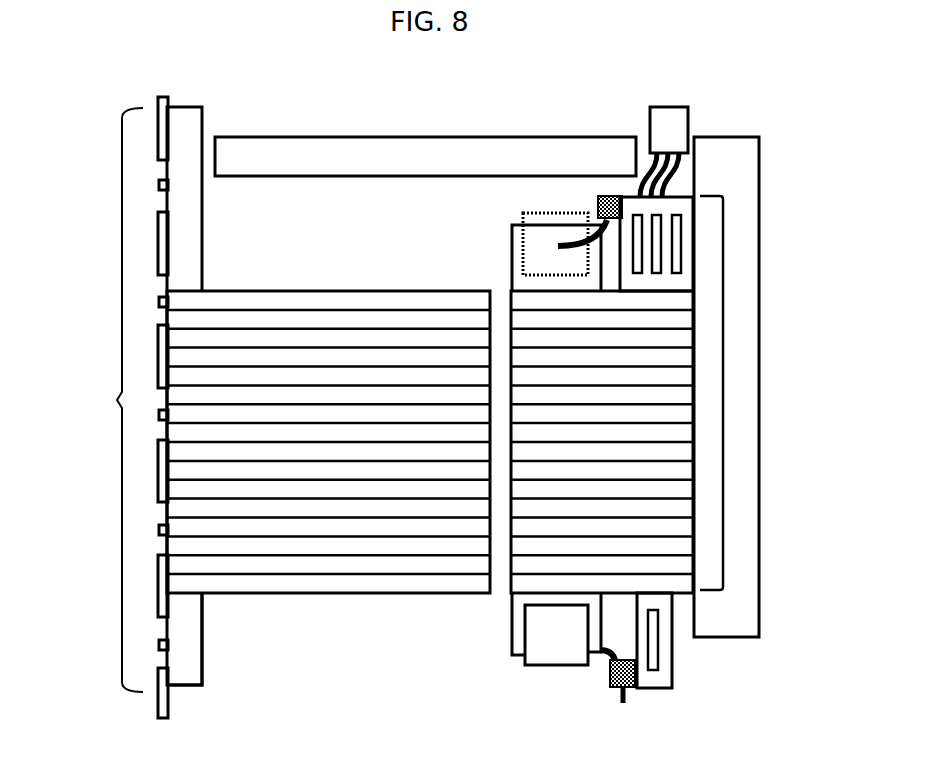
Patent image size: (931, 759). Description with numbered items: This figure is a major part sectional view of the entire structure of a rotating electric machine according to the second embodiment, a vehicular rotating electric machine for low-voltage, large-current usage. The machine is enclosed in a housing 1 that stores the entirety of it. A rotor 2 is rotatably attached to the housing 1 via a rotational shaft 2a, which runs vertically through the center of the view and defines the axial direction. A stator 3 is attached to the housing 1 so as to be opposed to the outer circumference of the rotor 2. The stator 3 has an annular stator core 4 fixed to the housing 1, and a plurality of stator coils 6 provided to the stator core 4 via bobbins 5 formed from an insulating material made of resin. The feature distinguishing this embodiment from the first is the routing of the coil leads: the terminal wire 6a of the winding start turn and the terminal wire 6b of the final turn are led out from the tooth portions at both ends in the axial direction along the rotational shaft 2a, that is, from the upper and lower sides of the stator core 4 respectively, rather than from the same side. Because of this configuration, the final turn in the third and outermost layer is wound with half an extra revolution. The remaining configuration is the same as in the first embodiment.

The housing 1 is at (262, 137).
The rotor 2 is at (117, 400).
The rotational shaft 2a is at (183, 645).
The stator 3 is at (723, 392).
The stator core 4 is at (660, 412).
The bobbin 5 is at (510, 240).
The stator coil 6 is at (543, 217).
The terminal wire 6a is at (572, 237).
The terminal wire 6b is at (608, 655).